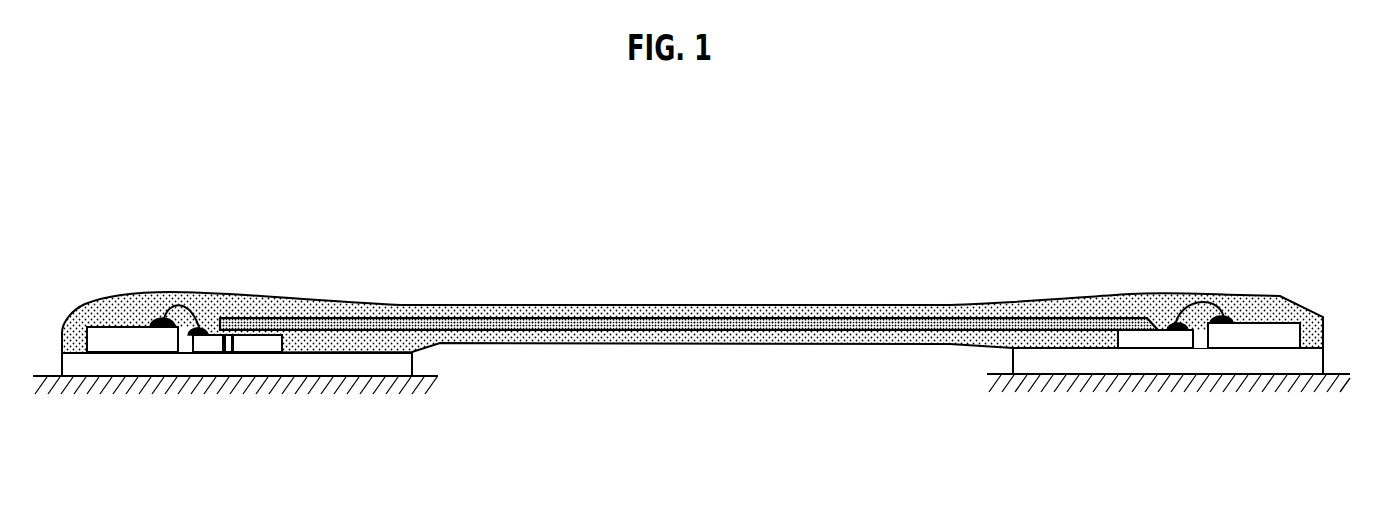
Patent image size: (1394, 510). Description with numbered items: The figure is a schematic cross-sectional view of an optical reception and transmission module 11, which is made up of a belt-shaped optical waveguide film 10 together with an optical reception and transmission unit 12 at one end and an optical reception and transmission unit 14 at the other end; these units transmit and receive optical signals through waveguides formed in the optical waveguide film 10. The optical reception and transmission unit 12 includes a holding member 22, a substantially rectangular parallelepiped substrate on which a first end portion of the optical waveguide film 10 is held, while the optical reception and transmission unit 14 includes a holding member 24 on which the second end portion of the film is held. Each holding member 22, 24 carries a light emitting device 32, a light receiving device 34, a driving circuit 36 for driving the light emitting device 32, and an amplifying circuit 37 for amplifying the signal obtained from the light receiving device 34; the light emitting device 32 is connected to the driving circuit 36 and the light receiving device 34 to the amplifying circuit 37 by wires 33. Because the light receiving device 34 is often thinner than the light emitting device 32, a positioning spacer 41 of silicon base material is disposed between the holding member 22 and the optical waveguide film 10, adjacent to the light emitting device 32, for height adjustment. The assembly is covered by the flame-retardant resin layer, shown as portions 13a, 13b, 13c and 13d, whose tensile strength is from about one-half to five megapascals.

The optical waveguide film 10 is at (883, 325).
The optical reception and transmission module 11 is at (997, 190).
The optical reception and transmission unit 12 is at (132, 282).
The flame-retardant resin layer 13a is at (683, 313).
The flame-retardant resin layer 13b is at (757, 345).
The flame-retardant resin layer 13c is at (1108, 302).
The flame-retardant resin layer 13d is at (222, 306).
The optical reception and transmission unit 14 is at (1310, 277).
The holding member 22 is at (72, 365).
The holding member 24 is at (1313, 363).
The light emitting device 32 is at (205, 345).
The wires 33 is at (183, 308).
The light receiving device 34 is at (1148, 340).
The driving circuit 36 is at (113, 345).
The amplifying circuit 37 is at (1268, 338).
The positioning spacer 41 is at (257, 345).